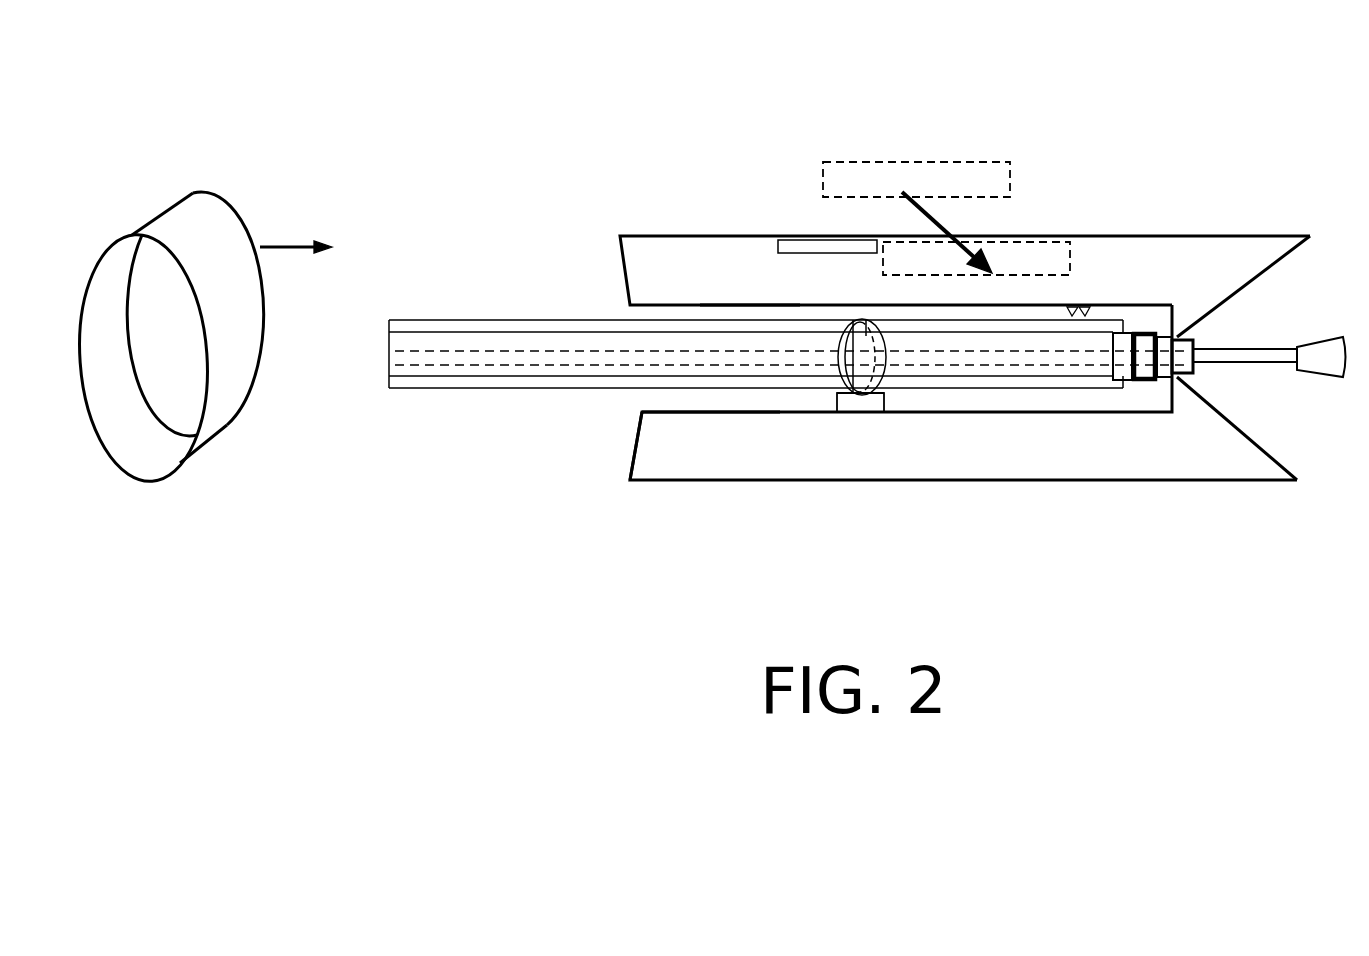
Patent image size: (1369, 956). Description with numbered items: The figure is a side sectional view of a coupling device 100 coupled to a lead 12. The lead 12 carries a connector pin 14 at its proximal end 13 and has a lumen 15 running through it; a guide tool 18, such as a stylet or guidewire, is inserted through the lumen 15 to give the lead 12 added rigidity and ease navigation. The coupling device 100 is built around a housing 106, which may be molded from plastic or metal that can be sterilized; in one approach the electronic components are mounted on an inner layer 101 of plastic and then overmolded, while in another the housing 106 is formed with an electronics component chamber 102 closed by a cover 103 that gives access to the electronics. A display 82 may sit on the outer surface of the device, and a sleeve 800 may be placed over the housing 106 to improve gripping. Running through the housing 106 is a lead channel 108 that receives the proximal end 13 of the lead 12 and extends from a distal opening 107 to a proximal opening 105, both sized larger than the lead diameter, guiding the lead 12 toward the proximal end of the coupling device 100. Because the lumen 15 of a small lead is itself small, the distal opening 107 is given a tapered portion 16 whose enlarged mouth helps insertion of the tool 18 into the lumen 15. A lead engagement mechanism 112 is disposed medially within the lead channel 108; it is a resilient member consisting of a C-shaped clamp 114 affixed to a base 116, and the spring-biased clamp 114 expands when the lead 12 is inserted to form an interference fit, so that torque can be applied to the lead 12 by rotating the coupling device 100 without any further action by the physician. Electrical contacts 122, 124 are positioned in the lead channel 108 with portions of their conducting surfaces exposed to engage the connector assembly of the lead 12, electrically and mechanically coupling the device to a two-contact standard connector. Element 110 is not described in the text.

The coupling device 100 is at (831, 34).
The sleeve 800 is at (103, 442).
The lead 12 is at (799, 376).
The connector pin 14 is at (1112, 303).
The proximal end 13 is at (1077, 377).
The lumen 15 is at (412, 341).
The lead channel 108 is at (925, 309).
The housing 106 is at (916, 397).
The housing top wall 110 is at (683, 412).
The distal opening 107 is at (642, 415).
The inner layer 101 is at (753, 413).
The display 82 is at (815, 240).
The cover 103 is at (955, 162).
The electronics component chamber 102 is at (1020, 262).
The C-shaped clamp 114 is at (830, 363).
The base 116 is at (850, 403).
The lead engagement mechanism 112 is at (905, 420).
The electrical contact 122 is at (1073, 307).
The electrical contact 124 is at (1143, 333).
The proximal opening 105 is at (1167, 377).
The guide tool 18 is at (1265, 347).
The tapered portion 16 is at (1263, 447).